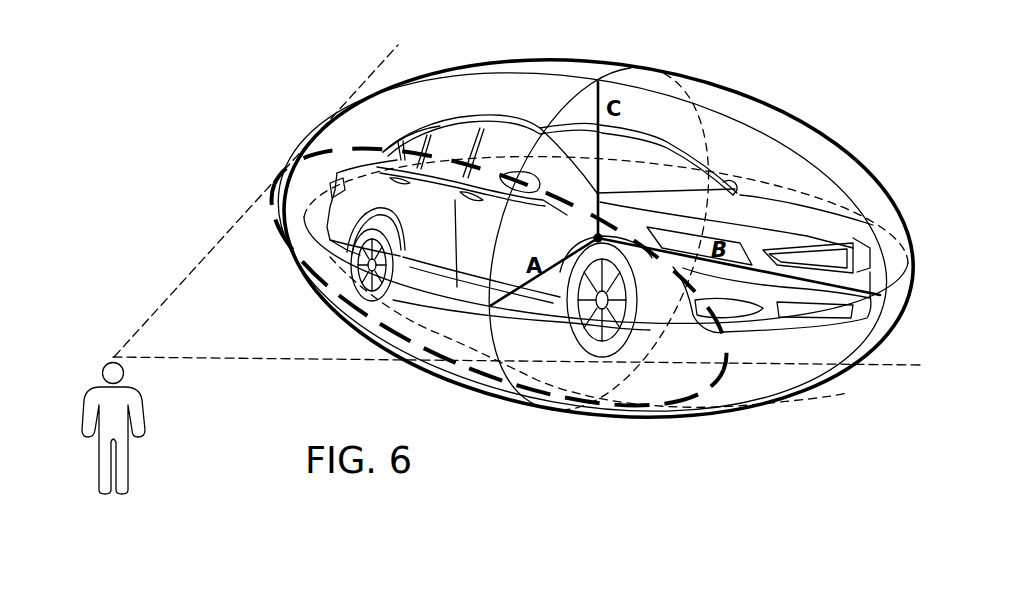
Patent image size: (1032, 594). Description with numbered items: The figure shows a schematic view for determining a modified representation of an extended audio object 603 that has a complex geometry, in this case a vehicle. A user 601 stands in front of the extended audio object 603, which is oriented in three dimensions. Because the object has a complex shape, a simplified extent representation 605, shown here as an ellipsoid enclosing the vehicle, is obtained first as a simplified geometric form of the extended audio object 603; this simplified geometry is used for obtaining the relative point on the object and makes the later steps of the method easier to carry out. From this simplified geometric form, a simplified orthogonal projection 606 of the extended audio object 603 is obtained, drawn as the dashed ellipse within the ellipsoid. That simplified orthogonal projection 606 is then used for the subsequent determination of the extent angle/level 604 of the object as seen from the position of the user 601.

The user 601 is at (100, 462).
The extended audio object 603 is at (537, 117).
The extent angle/level 604 is at (163, 338).
The simplified extent representation 605 is at (781, 109).
The simplified orthogonal projection 606 is at (727, 421).